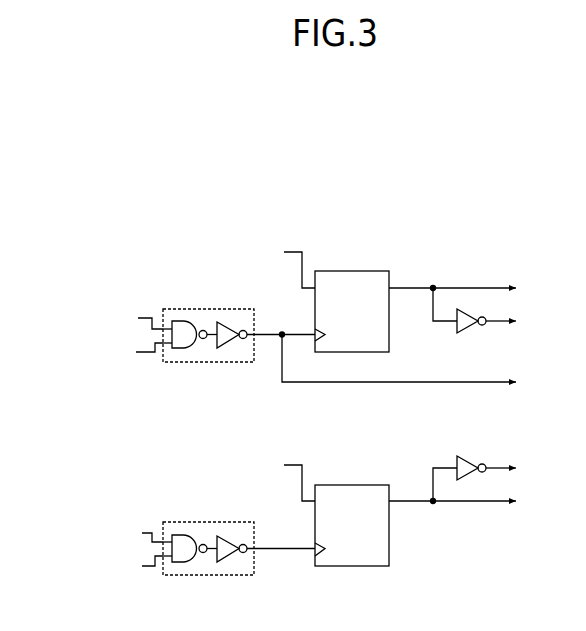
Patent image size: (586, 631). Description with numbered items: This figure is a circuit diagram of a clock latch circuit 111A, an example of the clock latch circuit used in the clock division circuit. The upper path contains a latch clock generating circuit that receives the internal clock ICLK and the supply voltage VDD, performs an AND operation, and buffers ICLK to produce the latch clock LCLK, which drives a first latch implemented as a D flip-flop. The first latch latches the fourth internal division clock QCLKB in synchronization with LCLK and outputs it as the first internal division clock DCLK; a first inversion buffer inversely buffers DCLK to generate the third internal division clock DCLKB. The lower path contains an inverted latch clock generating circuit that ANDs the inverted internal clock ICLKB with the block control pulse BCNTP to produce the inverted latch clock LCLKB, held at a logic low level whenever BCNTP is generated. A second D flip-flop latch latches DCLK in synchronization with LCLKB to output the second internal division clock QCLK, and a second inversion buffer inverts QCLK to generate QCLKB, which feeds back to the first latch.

The clock latch circuit 111A is at (560, 194).